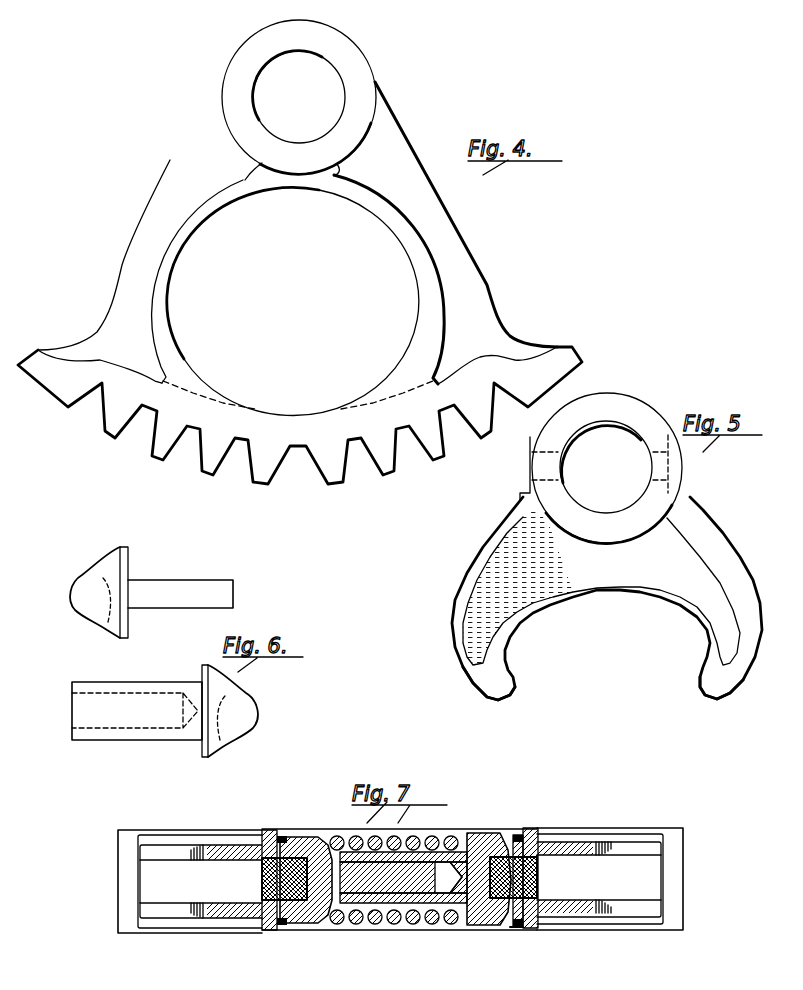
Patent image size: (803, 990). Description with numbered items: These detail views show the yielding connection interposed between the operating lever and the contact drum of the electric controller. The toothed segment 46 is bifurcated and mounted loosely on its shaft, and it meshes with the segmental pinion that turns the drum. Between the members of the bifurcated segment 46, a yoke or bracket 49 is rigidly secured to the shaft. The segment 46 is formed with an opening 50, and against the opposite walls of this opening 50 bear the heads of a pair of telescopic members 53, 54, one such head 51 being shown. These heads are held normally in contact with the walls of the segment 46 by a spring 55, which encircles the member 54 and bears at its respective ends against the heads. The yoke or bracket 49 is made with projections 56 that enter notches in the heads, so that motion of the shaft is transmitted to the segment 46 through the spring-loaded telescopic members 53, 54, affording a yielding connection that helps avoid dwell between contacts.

In FIG. 4, the toothed segment 46 is at (170, 160).
In FIG. 7, the toothed segment 46 is at (613, 863).
In FIG. 5, the yoke or bracket 49 is at (607, 546).
In FIG. 7, the yoke or bracket 49 is at (537, 847).
In FIG. 4, the opening 50 is at (293, 302).
In FIG. 7, the opening 50 is at (510, 927).
In FIG. 6, the head 51 is at (99, 592).
In FIG. 7, the head 51 is at (303, 843).
In FIG. 6, the telescopic member 53 is at (180, 582).
In FIG. 7, the telescopic member 53 is at (380, 890).
In FIG. 6, the telescopic member 54 is at (165, 709).
In FIG. 7, the telescopic member 54 is at (457, 907).
In FIG. 7, the spring 55 is at (450, 838).
In FIG. 5, the projections 56 is at (697, 689).
In FIG. 7, the projections 56 is at (543, 877).